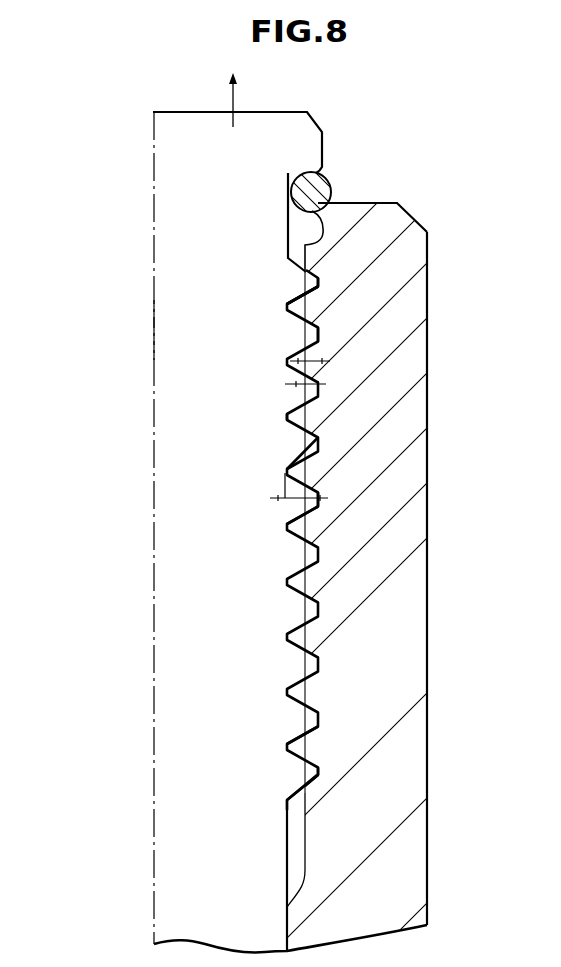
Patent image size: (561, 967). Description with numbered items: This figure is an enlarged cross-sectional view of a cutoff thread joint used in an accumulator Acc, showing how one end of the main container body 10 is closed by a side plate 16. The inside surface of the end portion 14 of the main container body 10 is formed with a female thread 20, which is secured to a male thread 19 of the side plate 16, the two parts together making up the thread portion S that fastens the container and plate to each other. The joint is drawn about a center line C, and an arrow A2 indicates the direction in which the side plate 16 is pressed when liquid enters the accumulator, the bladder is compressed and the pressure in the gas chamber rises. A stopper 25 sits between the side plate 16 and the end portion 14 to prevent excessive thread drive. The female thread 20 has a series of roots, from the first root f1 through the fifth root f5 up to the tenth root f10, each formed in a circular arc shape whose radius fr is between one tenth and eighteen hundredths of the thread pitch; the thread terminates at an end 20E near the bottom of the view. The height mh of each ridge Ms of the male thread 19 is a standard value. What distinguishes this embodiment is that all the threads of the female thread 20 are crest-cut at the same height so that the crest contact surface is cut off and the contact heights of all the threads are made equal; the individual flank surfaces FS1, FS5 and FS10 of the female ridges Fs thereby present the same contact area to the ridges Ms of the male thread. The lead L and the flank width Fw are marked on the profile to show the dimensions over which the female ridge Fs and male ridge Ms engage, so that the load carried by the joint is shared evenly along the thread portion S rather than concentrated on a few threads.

The main container body 10 is at (280, 483).
The end portion 14 is at (427, 525).
The side plate 16 is at (322, 148).
The male thread 19 is at (158, 480).
The female thread 20 is at (427, 362).
The thread end 20E is at (286, 793).
The stopper 25 is at (332, 186).
The arrow A2 is at (233, 102).
The accumulator Acc is at (152, 220).
The center line C is at (152, 330).
The flank surface 10 FS10 is at (305, 252).
The ridge of the female thread Fs is at (287, 298).
The root of the female thread f10 is at (318, 281).
The ridge of the male thread Ms is at (312, 334).
The lead L is at (300, 374).
The flank width Fw is at (291, 399).
The thread portion S is at (289, 438).
The height of the ridges of the male thread mh is at (292, 502).
The root of the female thread f5 is at (318, 505).
The flank surface 5 FS5 is at (305, 530).
The flank surface 1 FS1 is at (303, 740).
The radius of the root fr is at (310, 778).
The root of the female thread f1 is at (310, 778).